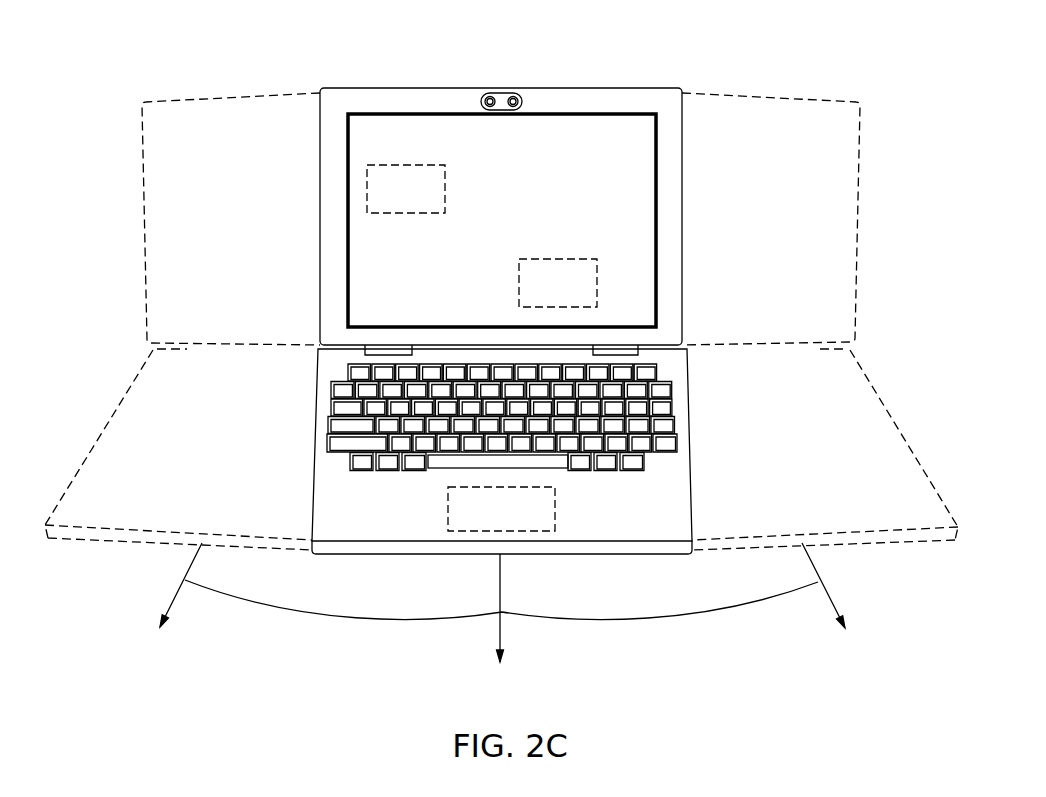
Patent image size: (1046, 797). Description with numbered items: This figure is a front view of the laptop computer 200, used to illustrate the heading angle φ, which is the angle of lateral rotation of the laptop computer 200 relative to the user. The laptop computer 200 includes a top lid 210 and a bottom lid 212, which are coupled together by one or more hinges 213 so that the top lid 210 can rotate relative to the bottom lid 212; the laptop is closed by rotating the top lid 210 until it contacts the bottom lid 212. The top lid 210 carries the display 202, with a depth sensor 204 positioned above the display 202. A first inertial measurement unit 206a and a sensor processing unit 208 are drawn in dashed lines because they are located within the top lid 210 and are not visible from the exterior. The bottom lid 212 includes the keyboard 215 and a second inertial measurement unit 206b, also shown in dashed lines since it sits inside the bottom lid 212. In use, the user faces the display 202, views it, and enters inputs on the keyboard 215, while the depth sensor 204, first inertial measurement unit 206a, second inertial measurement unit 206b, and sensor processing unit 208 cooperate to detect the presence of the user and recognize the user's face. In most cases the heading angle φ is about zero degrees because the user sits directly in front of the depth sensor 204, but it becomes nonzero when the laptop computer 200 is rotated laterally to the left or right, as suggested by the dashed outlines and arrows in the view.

The laptop computer 200 is at (809, 66).
The display 202 is at (625, 191).
The depth sensor 204 is at (503, 95).
The first inertial measurement unit 206a is at (367, 182).
The second inertial measurement unit 206b is at (555, 517).
The sensor processing unit 208 is at (598, 288).
The top lid 210 is at (320, 268).
The bottom lid 212 is at (313, 458).
The hinges 213 is at (372, 345).
The keyboard 215 is at (663, 407).